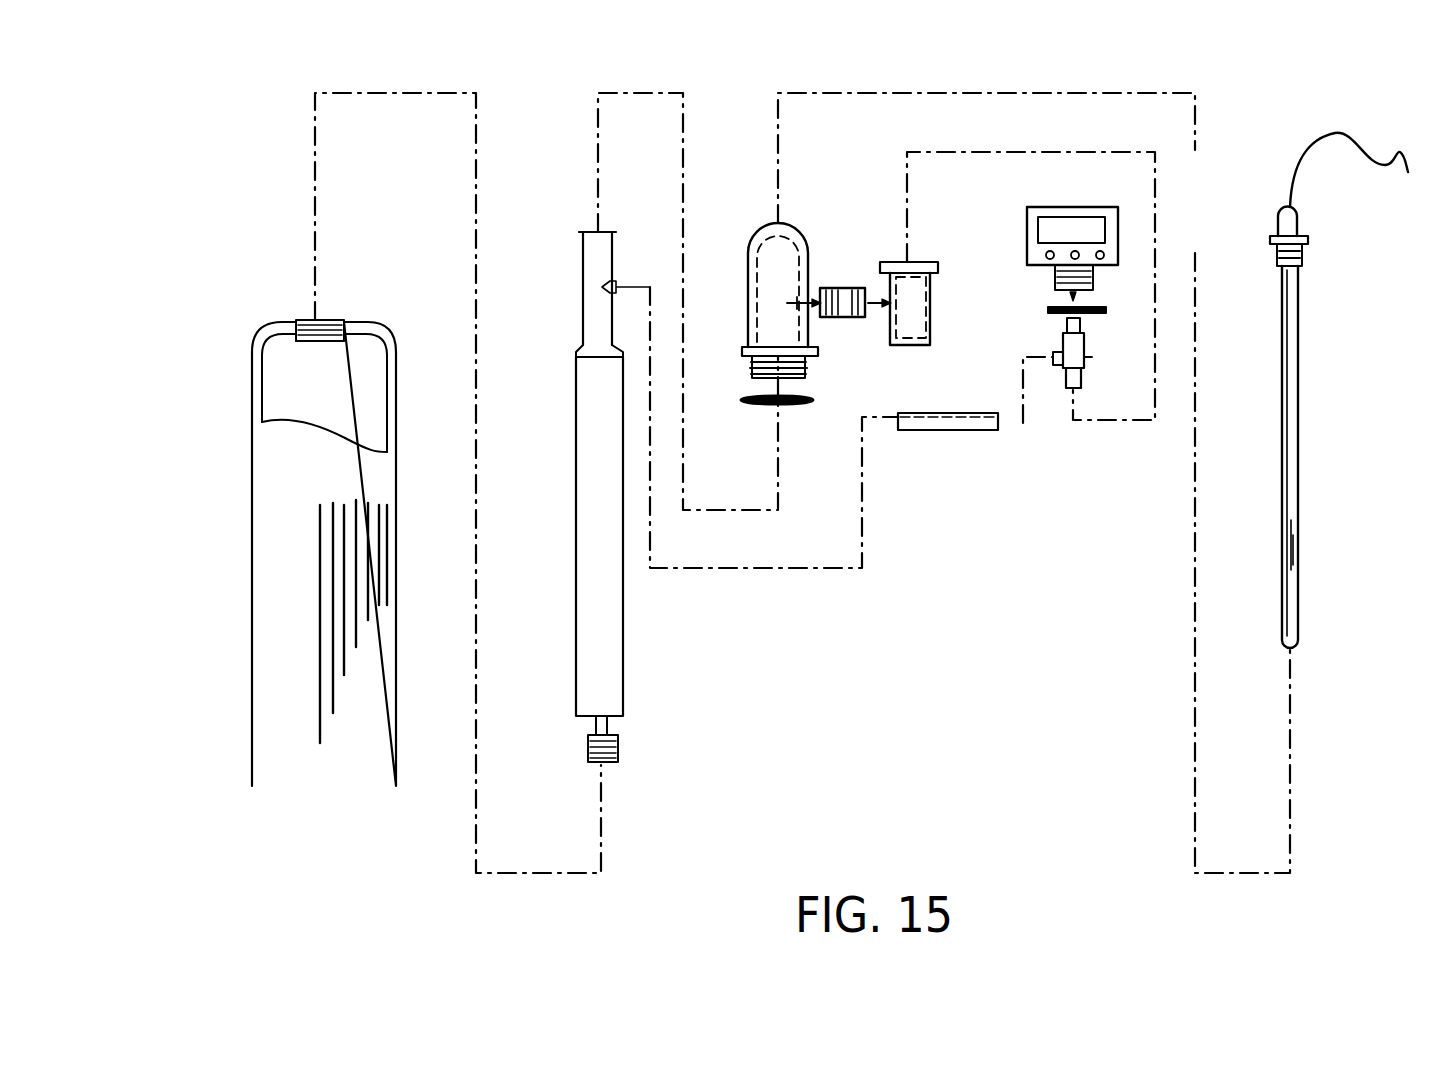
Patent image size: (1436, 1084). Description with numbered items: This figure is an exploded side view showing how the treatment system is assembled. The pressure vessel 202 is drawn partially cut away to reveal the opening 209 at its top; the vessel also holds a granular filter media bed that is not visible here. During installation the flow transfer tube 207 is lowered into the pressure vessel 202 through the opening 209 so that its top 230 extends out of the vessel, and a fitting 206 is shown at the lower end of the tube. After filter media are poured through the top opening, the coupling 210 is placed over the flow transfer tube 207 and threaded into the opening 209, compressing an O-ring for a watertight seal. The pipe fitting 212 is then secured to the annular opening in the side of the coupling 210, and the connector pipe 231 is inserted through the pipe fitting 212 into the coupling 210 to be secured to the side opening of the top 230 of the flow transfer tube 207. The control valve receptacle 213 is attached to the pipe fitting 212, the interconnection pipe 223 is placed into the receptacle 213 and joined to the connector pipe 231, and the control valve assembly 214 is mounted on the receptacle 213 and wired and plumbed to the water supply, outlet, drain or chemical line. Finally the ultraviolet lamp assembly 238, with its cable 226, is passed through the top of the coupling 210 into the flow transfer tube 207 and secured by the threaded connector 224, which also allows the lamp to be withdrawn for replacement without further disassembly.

The pressure vessel 202 is at (251, 518).
The opening 209 is at (298, 321).
The top of flow transfer tube 230 is at (583, 302).
The flow transfer tube 207 is at (575, 518).
The column outlet end fitting 206 is at (620, 745).
The coupling 210 is at (755, 292).
The pipe fitting 212 is at (840, 318).
The control valve receptacle 213 is at (935, 325).
The connector pipe 231 is at (960, 430).
The control valve assembly 214 is at (1058, 206).
The interconnection pipe 223 is at (1092, 357).
The cable 226 is at (1338, 131).
The connector 224 is at (1297, 210).
The ultraviolet lamp assembly 238 is at (1298, 460).